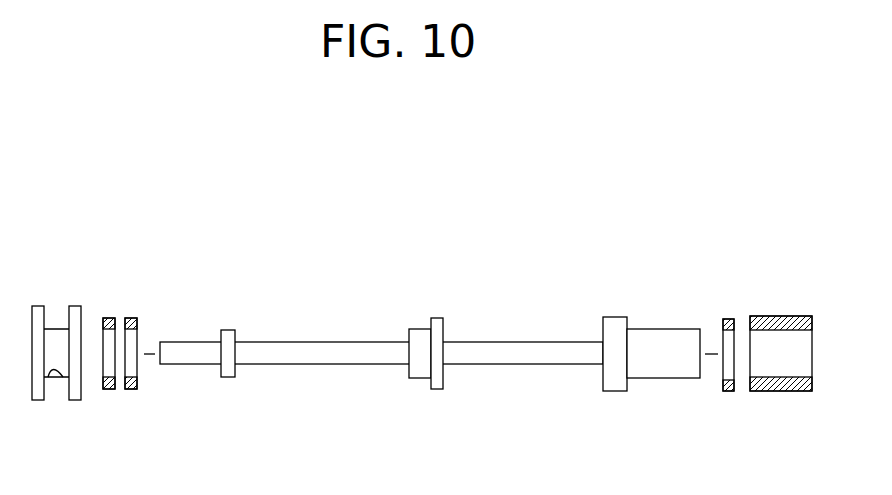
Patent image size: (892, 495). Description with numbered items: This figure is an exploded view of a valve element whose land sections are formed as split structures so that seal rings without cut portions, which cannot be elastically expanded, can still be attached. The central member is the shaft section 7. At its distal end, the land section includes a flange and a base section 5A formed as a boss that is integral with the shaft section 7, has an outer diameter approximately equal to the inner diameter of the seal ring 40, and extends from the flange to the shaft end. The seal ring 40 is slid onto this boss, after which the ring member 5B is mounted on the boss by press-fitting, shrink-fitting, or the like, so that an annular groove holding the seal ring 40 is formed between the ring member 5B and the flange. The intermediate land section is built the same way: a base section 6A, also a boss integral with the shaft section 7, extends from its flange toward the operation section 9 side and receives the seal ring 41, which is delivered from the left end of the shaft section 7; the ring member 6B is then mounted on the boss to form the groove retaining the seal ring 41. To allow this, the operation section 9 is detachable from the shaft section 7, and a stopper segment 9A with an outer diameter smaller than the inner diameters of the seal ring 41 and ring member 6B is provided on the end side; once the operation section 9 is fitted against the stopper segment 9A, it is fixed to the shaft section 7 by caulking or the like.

The operation section 9 is at (50, 377).
The ring member 6B is at (110, 317).
The seal ring 41 is at (132, 317).
The shaft section 7 is at (332, 364).
The stopper segment 9A is at (228, 377).
The base section 6A is at (433, 389).
The base section 5A is at (653, 329).
The seal ring 40 is at (725, 392).
The ring member 5B is at (782, 316).